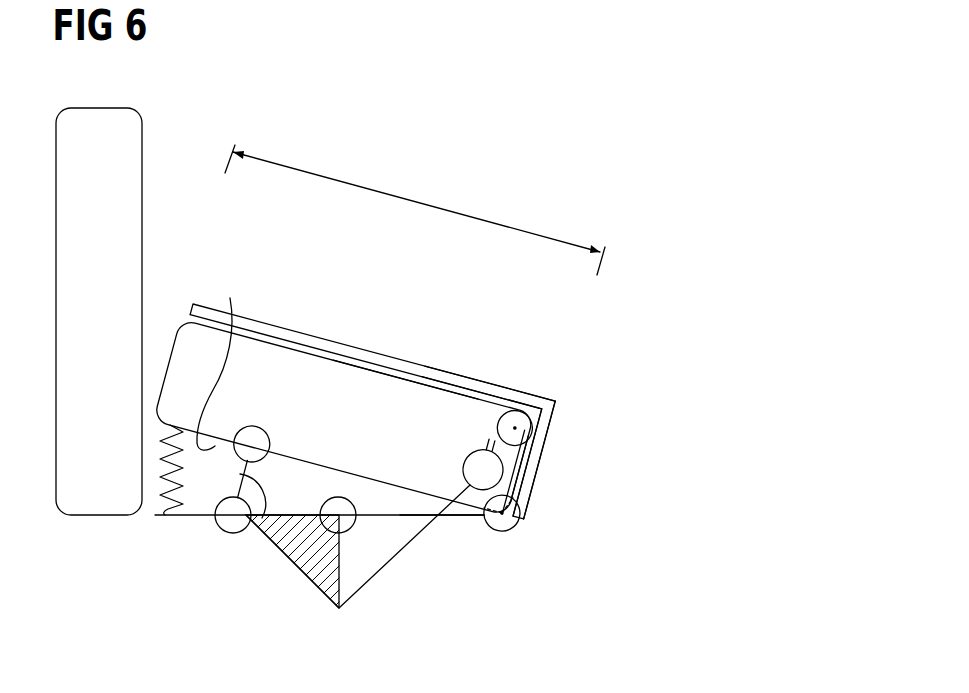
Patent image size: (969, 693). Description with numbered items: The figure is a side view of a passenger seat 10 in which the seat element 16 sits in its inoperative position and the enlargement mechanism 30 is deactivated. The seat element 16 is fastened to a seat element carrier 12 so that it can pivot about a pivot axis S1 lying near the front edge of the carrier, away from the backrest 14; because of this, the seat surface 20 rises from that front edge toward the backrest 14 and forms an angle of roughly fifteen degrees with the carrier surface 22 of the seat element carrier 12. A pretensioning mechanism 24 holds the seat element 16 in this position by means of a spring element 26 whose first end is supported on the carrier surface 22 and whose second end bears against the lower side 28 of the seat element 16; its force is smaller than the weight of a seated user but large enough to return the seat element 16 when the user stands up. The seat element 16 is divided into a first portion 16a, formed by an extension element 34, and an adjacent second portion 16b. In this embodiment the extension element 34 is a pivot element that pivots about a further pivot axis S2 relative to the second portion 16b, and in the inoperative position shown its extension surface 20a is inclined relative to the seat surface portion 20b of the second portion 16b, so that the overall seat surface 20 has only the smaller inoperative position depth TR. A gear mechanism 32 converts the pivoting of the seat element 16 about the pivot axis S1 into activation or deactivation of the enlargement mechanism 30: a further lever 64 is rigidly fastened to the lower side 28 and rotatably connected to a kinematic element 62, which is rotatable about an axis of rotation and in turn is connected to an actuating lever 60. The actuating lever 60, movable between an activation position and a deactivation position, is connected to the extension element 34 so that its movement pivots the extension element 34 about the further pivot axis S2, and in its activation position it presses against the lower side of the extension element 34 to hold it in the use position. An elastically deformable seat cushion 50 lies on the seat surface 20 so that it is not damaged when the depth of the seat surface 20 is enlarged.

The passenger seat 10 is at (540, 170).
The seat element carrier 12 is at (463, 517).
The backrest 14 is at (101, 113).
The seat element 16 is at (303, 361).
The first portion of the seat element 16a is at (508, 473).
The second portion of the seat element 16b is at (398, 383).
The seat surface 20 is at (353, 362).
The extension surface 20a is at (548, 447).
The seat surface portion 20b is at (466, 390).
The carrier surface 22 is at (193, 517).
The pretensioning mechanism 24 is at (152, 494).
The spring element 26 is at (167, 508).
The lower side of the seat element 28 is at (221, 359).
The enlargement mechanism 30 is at (594, 390).
The gear mechanism 32 is at (332, 622).
The extension element 34 is at (523, 503).
The seat cushion 50 is at (273, 328).
The actuating lever 60 is at (391, 562).
The kinematic element 62 is at (313, 573).
The further lever 64 is at (250, 529).
The pivot axis S1 is at (513, 523).
The further pivot axis S2 is at (515, 428).
The inoperative position depth TR is at (417, 202).